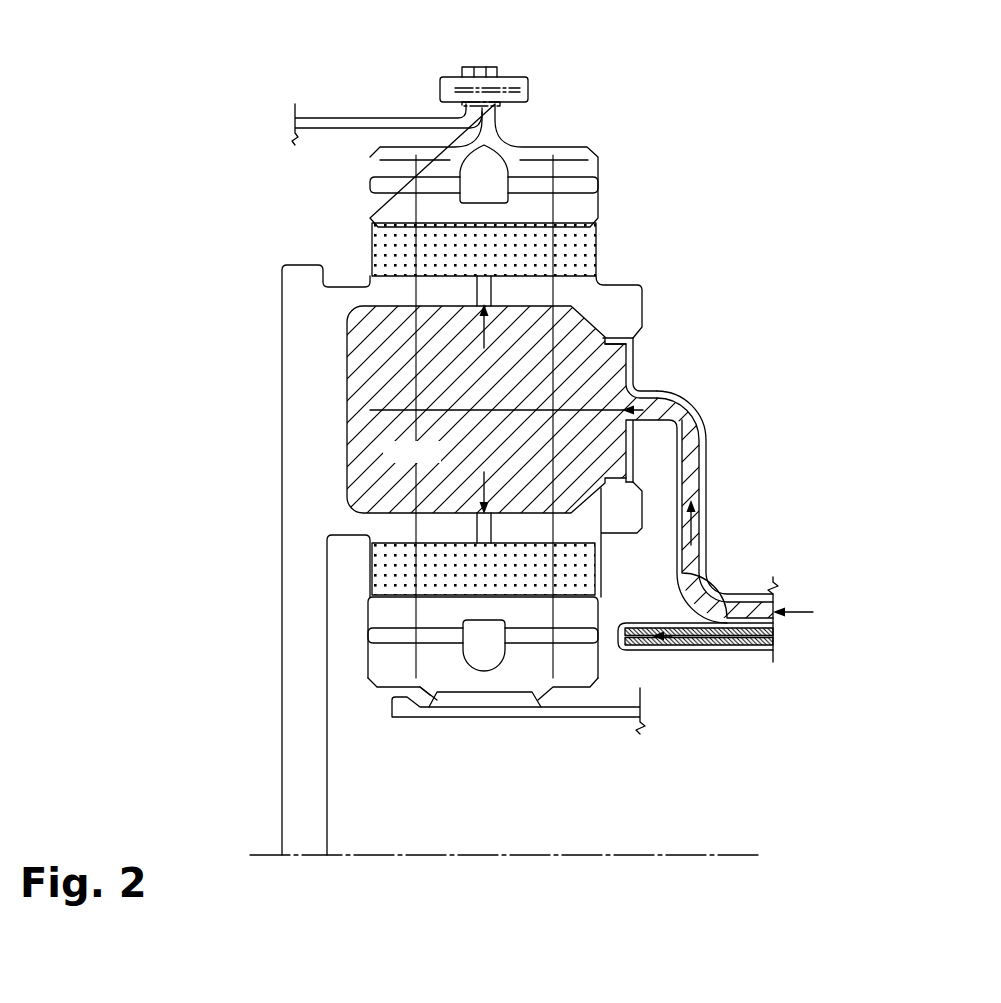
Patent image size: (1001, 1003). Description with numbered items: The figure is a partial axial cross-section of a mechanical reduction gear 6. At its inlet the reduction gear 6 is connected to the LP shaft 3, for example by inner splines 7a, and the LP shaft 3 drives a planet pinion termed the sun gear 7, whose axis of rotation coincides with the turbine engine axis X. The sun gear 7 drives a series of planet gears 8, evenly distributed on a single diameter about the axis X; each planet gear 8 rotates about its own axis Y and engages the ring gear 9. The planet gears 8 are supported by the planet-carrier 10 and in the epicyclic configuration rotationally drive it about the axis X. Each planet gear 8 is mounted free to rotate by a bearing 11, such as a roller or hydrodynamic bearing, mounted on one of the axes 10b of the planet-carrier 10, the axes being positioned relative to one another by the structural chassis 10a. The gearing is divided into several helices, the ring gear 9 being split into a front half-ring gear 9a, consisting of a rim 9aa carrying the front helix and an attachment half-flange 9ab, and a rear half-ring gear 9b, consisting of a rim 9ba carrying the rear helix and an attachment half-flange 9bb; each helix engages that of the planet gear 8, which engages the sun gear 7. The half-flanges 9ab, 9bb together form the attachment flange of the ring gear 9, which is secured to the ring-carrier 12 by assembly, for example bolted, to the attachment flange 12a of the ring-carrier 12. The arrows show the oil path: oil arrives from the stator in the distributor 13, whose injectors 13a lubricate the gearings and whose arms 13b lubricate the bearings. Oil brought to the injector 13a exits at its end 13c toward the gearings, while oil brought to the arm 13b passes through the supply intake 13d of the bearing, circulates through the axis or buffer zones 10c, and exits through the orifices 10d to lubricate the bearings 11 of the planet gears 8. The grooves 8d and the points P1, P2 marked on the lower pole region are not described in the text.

The LP shaft 3 is at (602, 710).
The reduction gear 6 is at (728, 229).
The sun gear 7 is at (414, 738).
The inner splines 7a is at (467, 707).
The planet gears 8 is at (409, 684).
The groove of lower pole piece 8d is at (378, 633).
The ring gear 9 is at (482, 145).
The front half-ring gear 9a is at (366, 164).
The rim 9aa is at (395, 158).
The attachment half-flange 9ab is at (478, 66).
The rear half-ring gear 9b is at (606, 165).
The rim 9ba is at (540, 155).
The attachment half-flange 9bb is at (490, 66).
The planet-carrier 10 is at (494, 558).
The structural chassis 10a is at (305, 362).
The axes 10b is at (627, 515).
The buffer zones 10c is at (560, 463).
The orifices 10d is at (493, 290).
The bearing 11 is at (590, 238).
The ring-carrier 12 is at (333, 116).
The attachment flange 12a is at (460, 53).
The distributor 13 is at (730, 531).
The injectors 13a is at (720, 650).
The arms 13b is at (706, 470).
The end 13c is at (620, 667).
The supply intake 13d is at (630, 357).
The point P1 is at (410, 672).
The point P2 is at (550, 662).
The axis of rotation X is at (738, 856).
The axis Y is at (638, 378).